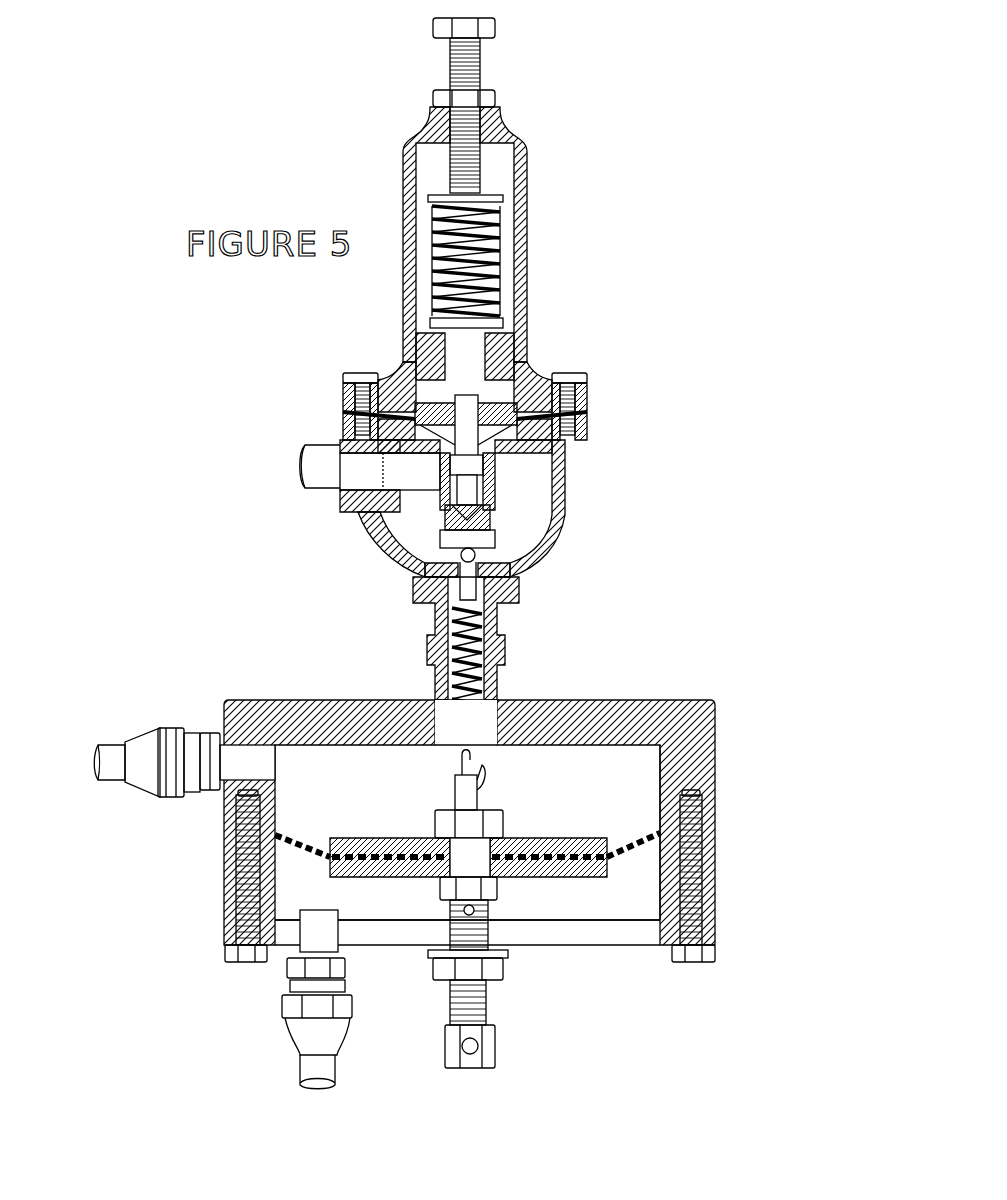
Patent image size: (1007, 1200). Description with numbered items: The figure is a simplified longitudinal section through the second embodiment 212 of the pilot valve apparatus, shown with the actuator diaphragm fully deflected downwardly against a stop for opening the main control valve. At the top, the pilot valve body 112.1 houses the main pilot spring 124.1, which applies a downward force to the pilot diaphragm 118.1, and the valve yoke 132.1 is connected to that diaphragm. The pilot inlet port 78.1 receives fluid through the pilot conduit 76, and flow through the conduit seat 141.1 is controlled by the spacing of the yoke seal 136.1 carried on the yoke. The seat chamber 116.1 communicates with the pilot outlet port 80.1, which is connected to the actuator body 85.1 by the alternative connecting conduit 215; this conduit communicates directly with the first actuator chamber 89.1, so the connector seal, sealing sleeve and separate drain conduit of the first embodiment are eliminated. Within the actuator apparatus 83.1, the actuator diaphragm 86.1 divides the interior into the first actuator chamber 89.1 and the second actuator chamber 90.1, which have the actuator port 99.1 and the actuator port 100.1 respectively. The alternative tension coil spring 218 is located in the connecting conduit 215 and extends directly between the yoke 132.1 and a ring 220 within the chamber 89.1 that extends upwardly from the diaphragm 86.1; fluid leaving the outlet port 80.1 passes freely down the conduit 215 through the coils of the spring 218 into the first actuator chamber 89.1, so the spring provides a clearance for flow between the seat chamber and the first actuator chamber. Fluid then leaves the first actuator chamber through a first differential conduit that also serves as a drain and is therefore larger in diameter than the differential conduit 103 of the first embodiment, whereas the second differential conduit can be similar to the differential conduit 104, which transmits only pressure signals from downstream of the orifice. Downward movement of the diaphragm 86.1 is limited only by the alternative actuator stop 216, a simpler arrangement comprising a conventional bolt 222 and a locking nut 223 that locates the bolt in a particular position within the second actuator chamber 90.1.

The pilot valve body 112.1 is at (527, 215).
The second embodiment of pilot valve 212 is at (602, 252).
The main pilot spring 124.1 is at (500, 296).
The pilot diaphragm 118.1 is at (522, 415).
The valve yoke 132.1 is at (552, 472).
The conduit seat 141.1 is at (497, 513).
The seat chamber 116.1 is at (540, 548).
The yoke seal 136.1 is at (495, 540).
The pilot outlet port 80.1 is at (500, 597).
The alternative connecting conduit 215 is at (557, 651).
The actuator apparatus 83.1 is at (745, 709).
The actuator body 85.1 is at (713, 770).
The pilot conduit 76 is at (310, 445).
The pilot inlet port 78.1 is at (358, 483).
The alternative tension coil spring 218 is at (436, 622).
The differential conduit 103 is at (110, 745).
The actuator port 99.1 is at (277, 770).
The first actuator chamber 89.1 is at (377, 798).
The ring 220 is at (478, 802).
The actuator diaphragm 86.1 is at (655, 840).
The second actuator chamber 90.1 is at (594, 893).
The actuator port 100.1 is at (318, 935).
The locking nut 223 is at (440, 968).
The alternative actuator stop 216 is at (495, 945).
The bolt 222 is at (495, 1043).
The differential conduit 104 is at (340, 1070).